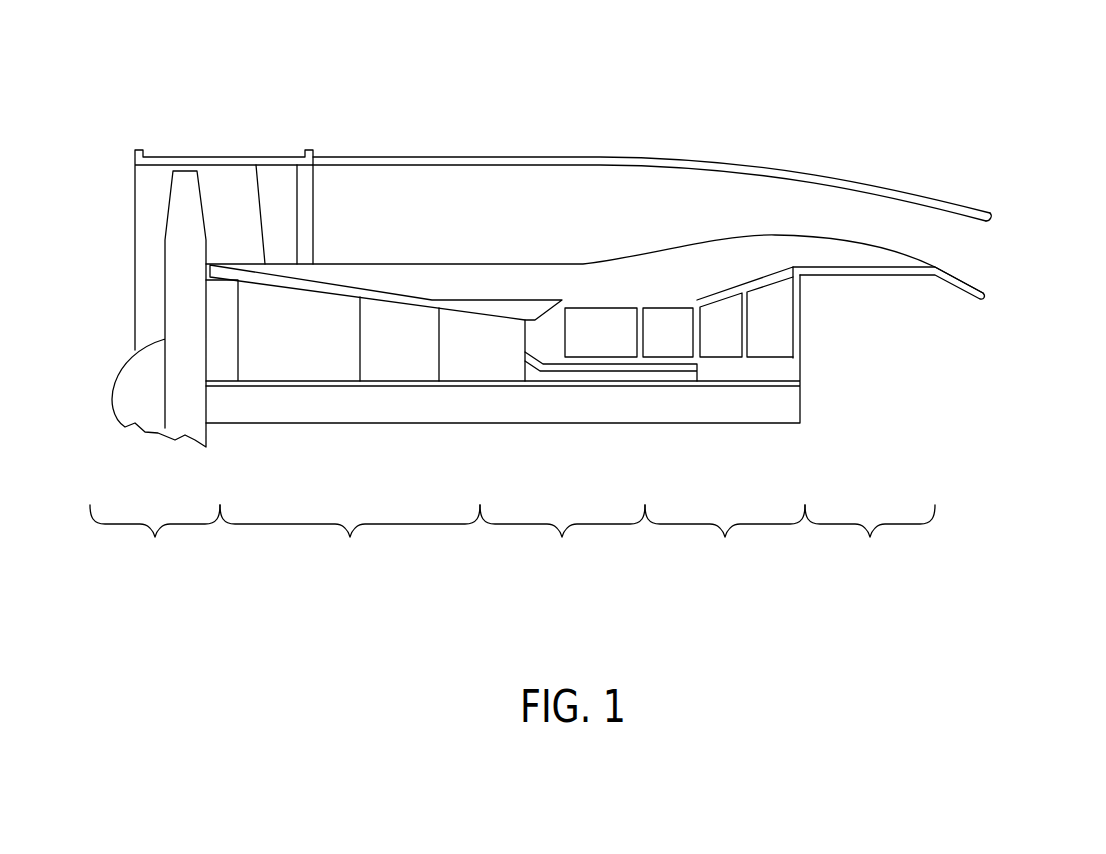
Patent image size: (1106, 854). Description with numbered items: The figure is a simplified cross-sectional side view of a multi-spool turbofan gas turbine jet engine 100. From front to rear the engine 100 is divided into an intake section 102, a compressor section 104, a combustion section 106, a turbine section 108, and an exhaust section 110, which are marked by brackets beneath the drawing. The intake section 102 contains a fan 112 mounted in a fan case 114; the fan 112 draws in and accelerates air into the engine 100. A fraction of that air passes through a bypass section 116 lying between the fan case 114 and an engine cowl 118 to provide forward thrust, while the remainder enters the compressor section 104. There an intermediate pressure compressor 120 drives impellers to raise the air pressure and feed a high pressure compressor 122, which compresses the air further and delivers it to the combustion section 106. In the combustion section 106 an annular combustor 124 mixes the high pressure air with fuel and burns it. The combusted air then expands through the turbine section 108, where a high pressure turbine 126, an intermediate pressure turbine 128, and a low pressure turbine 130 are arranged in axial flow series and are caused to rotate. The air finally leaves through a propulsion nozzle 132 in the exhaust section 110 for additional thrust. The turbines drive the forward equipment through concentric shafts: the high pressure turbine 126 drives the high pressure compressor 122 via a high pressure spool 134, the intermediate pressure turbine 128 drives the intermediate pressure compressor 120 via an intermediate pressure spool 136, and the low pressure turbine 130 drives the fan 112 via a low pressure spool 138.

The multi-spool turbofan gas turbine jet engine 100 is at (350, 124).
The intake section 102 is at (155, 539).
The compressor section 104 is at (350, 539).
The combustion section 106 is at (562, 539).
The turbine section 108 is at (725, 539).
The exhaust section 110 is at (870, 539).
The fan 112 is at (177, 265).
The fan case 114 is at (232, 157).
The bypass section 116 is at (487, 178).
The engine cowl 118 is at (557, 265).
The intermediate pressure compressor 120 is at (307, 370).
The high pressure compressor 122 is at (483, 368).
The annular combustor 124 is at (612, 322).
The high pressure turbine 126 is at (675, 318).
The intermediate pressure turbine 128 is at (725, 316).
The low pressure turbine 130 is at (782, 300).
The propulsion nozzle 132 is at (960, 343).
The high pressure spool 134 is at (567, 365).
The intermediate pressure spool 136 is at (648, 382).
The low pressure spool 138 is at (713, 413).